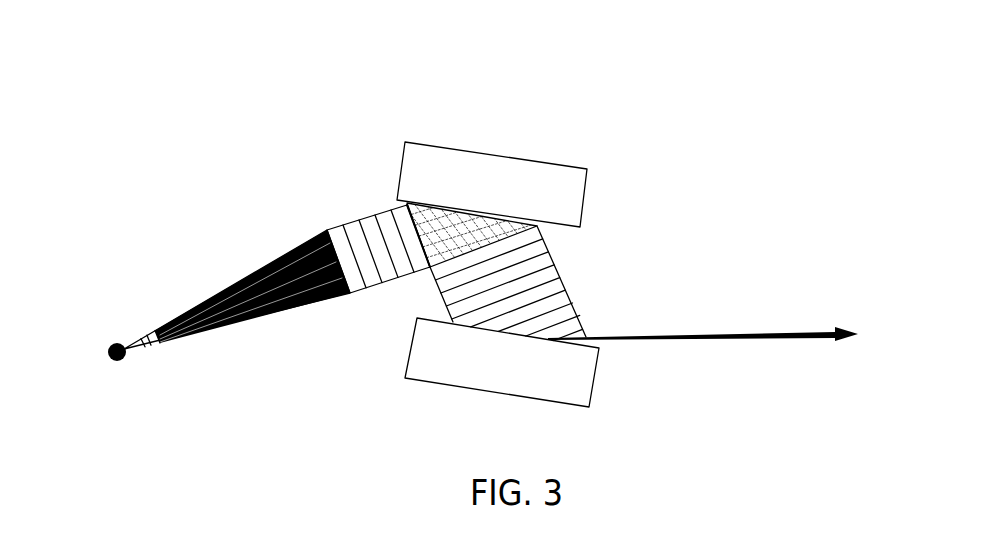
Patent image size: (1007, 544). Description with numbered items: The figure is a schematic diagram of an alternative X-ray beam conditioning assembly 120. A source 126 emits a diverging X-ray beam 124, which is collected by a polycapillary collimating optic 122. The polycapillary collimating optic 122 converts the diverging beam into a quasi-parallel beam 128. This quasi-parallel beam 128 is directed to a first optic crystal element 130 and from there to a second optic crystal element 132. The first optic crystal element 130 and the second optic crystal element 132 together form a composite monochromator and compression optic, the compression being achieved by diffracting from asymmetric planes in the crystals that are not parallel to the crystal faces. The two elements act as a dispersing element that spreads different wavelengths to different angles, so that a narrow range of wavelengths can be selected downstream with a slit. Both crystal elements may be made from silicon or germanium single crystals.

The X-ray beam conditioning assembly 120 is at (275, 165).
The polycapillary collimating optic 122 is at (277, 320).
The diverging X-ray beam 124 is at (140, 338).
The source 126 is at (118, 362).
The quasi-parallel beam 128 is at (367, 215).
The first optic crystal element 130 is at (485, 150).
The second optic crystal element 132 is at (432, 383).